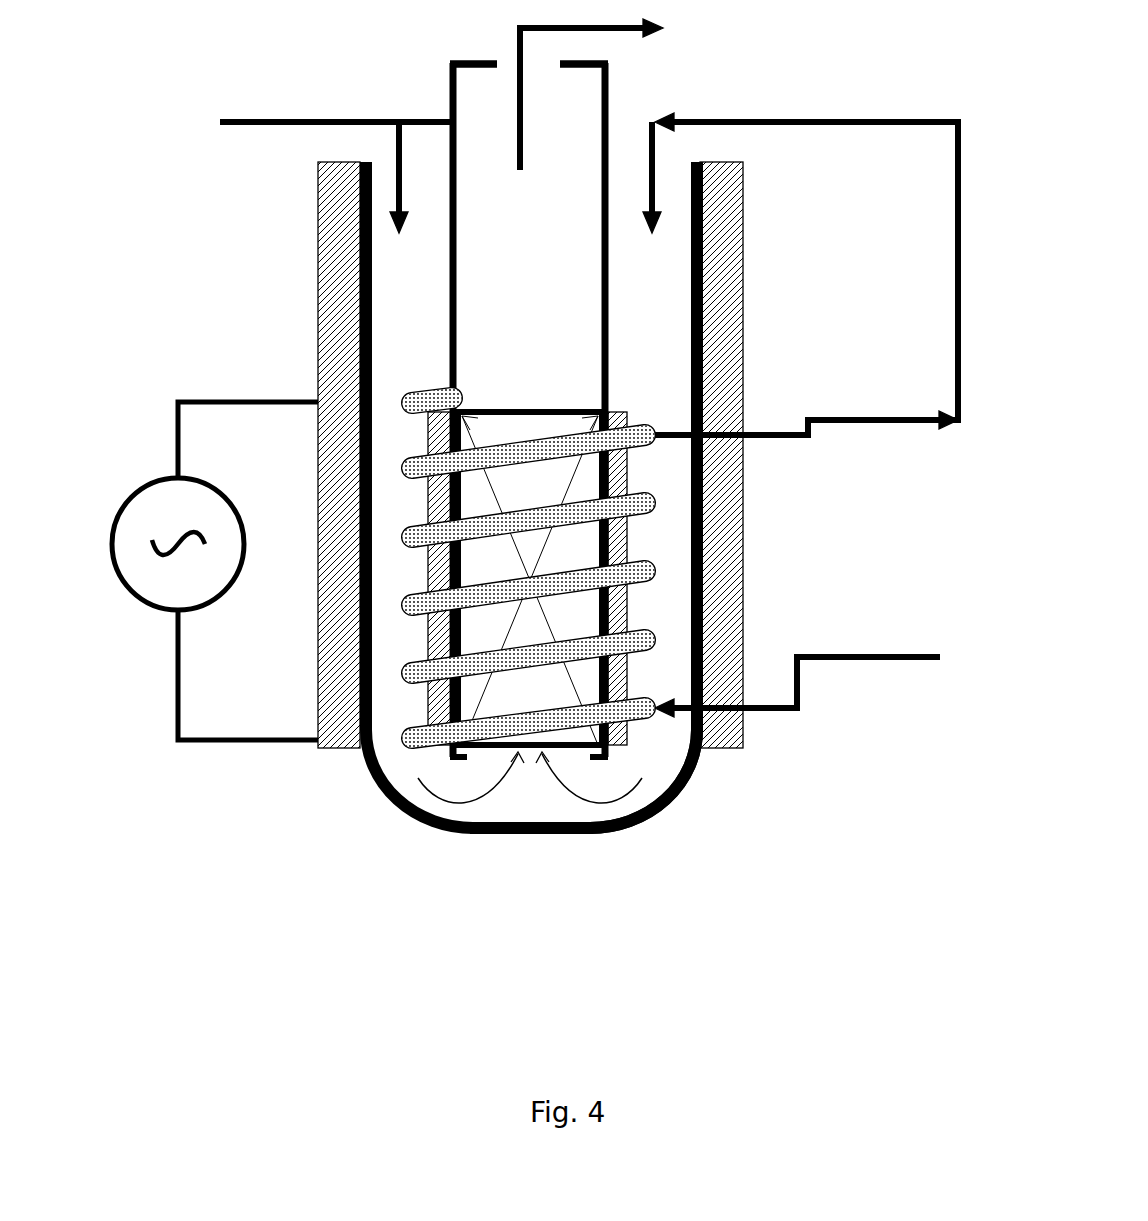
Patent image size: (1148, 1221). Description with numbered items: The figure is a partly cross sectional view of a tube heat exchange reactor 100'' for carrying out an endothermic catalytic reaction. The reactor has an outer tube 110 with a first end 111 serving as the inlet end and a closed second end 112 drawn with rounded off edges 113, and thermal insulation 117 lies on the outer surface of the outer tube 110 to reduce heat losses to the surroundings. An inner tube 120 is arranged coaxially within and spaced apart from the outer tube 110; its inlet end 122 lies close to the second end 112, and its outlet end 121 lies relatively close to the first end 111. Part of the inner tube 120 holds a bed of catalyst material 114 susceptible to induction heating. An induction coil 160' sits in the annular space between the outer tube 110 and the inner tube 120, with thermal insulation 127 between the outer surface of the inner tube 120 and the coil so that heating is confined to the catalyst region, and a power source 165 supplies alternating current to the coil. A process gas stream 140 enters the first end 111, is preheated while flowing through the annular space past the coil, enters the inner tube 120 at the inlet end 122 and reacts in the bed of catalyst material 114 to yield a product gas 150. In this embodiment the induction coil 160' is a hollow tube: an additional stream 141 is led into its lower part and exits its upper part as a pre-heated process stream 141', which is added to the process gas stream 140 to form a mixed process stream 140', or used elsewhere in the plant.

The tube heat exchange reactor 100'' is at (666, 940).
The outer tube 110 is at (705, 490).
The first end 111 is at (700, 155).
The second end 112 is at (676, 810).
The rounded off edges 113 is at (418, 822).
The bed of catalyst material 114 is at (403, 397).
The thermal insulation 117 is at (315, 605).
The inner tube 120 is at (610, 355).
The outlet end 121 is at (610, 78).
The inlet end 122 is at (610, 745).
The thermal insulation 127 is at (437, 637).
The process gas stream 140 is at (336, 104).
The process stream 140' is at (529, 472).
The additional stream 141 is at (797, 665).
The pre-heated process stream 141' is at (806, 262).
The product gas 150 is at (578, 114).
The induction coil 160' is at (420, 652).
The power source 165 is at (128, 583).